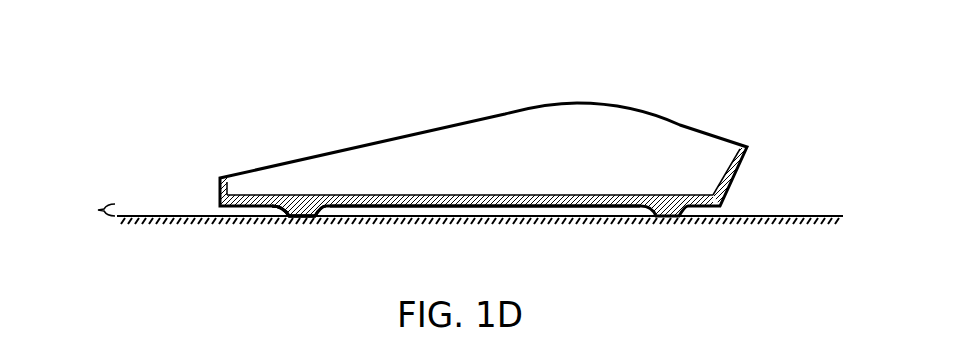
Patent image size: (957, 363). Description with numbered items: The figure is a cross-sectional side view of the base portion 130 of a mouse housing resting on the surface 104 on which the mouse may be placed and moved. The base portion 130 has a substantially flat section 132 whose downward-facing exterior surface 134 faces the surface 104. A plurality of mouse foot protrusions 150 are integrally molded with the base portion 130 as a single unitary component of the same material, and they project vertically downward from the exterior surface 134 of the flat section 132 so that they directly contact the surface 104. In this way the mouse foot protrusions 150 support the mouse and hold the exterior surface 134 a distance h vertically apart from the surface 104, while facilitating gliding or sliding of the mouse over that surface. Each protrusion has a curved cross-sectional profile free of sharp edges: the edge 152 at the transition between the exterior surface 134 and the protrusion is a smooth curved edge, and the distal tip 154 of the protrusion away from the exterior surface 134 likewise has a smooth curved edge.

The base portion 130 is at (707, 93).
The substantially flat section 132 is at (548, 197).
The exterior surface 134 is at (483, 207).
The surface 104 is at (778, 215).
The mouse foot protrusions 150 is at (303, 217).
The edge 152 is at (276, 208).
The distal tip 154 is at (292, 217).
The distance h is at (97, 210).